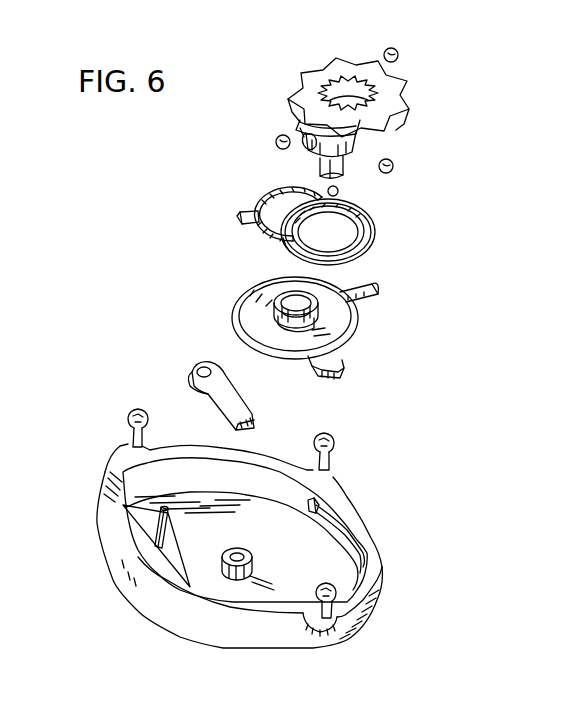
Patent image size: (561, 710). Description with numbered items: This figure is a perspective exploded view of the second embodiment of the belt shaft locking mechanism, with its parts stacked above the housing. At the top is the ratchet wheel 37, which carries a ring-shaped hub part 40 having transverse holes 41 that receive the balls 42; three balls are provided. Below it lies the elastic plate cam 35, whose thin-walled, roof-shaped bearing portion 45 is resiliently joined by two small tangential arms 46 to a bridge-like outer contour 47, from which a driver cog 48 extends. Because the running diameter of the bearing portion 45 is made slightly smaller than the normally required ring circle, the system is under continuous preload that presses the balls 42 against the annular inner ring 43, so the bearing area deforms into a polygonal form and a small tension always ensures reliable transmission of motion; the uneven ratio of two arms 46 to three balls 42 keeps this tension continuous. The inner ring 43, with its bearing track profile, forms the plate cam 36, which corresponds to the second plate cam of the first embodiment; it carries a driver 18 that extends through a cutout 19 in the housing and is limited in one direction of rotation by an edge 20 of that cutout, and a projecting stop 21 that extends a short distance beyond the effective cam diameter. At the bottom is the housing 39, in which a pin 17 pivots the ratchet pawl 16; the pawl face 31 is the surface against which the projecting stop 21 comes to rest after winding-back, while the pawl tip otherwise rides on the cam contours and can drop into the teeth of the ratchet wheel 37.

The ratchet pawl 16 is at (210, 383).
The pin 17 is at (166, 530).
The driver 18 is at (374, 283).
The cutout 19 is at (367, 569).
The edge 20 is at (318, 508).
The projecting stop 21 is at (340, 378).
The ratchet pawl face 31 is at (257, 422).
The plate cam 35 is at (375, 240).
The plate cam 36 is at (345, 338).
The ratchet wheel 37 is at (398, 82).
The housing 39 is at (170, 608).
The ring-shaped hub part 40 is at (318, 150).
The transverse holes 41 is at (352, 150).
The balls 42 is at (397, 50).
The inner ring 43 is at (320, 312).
The roof-shaped bearing portion 45 is at (282, 244).
The tangential arms 46 is at (324, 272).
The bridge-like outer contour 47 is at (262, 192).
The driver cog 48 is at (240, 218).